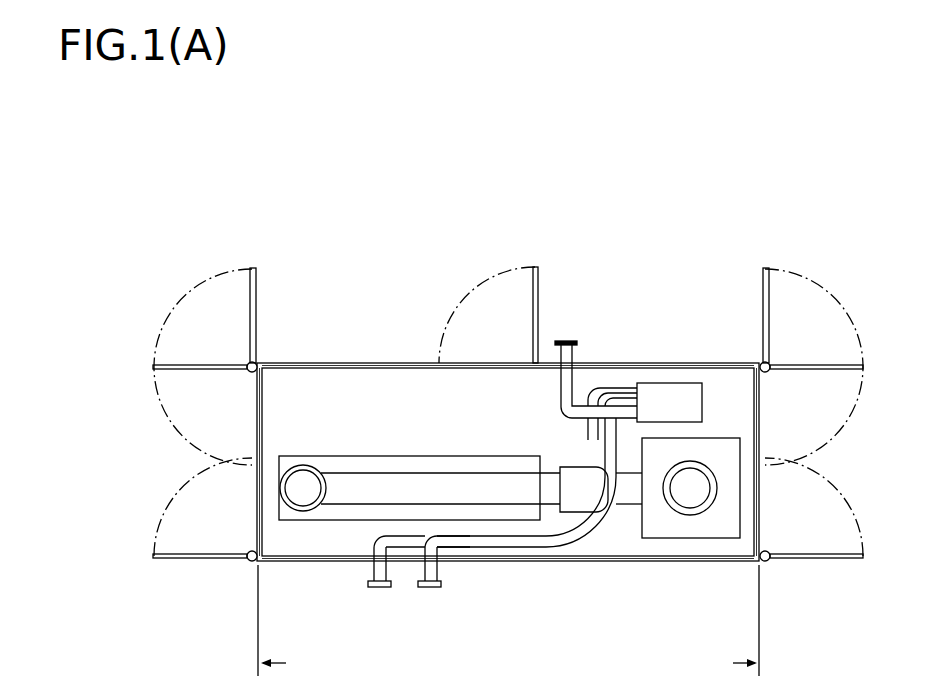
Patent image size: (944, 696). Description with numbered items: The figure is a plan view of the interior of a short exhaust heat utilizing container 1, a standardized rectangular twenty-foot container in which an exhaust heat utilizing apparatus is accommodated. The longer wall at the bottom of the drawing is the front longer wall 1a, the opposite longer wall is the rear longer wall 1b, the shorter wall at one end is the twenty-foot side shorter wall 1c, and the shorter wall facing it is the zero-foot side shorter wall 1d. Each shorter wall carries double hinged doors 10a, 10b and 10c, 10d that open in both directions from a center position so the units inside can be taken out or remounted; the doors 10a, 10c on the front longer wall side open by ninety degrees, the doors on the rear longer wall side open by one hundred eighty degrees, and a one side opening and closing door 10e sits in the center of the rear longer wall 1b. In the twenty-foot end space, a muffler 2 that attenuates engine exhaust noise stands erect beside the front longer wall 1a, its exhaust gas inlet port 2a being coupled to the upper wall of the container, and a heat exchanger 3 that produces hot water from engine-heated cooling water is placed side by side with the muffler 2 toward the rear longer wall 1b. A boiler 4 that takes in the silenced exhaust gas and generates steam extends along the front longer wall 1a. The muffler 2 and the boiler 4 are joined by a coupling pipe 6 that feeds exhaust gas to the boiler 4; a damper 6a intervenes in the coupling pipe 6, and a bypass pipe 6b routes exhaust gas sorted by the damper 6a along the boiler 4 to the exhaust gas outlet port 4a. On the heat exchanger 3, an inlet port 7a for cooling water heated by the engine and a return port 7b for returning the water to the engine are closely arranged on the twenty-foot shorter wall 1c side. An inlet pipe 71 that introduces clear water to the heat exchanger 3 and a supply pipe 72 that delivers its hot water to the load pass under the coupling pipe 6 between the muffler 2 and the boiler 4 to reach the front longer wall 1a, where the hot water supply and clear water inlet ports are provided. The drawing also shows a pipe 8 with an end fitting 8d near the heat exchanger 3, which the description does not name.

The short exhaust heat utilizing container 1 is at (470, 193).
The front longer wall 1a is at (330, 358).
The rear longer wall 1b is at (321, 569).
The 20 f side shorter wall 1c is at (770, 436).
The 0 f side shorter wall 1d is at (248, 434).
The double hinged door 10a is at (802, 560).
The double hinged door 10b is at (768, 284).
The double hinged door 10c is at (213, 563).
The double hinged door 10d is at (248, 283).
The one side opening and closing door 10e is at (533, 284).
The muffler 2 is at (713, 532).
The exhaust gas inlet port 2a is at (686, 515).
The heat exchanger 3 is at (673, 382).
The boiler 4 is at (403, 455).
The exhaust gas outlet port 4a is at (298, 514).
The coupling pipe 6 is at (622, 507).
The damper 6a is at (600, 513).
The bypass pipe 6b is at (505, 520).
The inlet port 7a is at (430, 590).
The return port 7b is at (375, 590).
The inlet pipe 71 is at (463, 548).
The supply pipe 72 is at (403, 548).
The exhaust pipe 8 is at (574, 377).
The pipe flange 8d is at (566, 340).